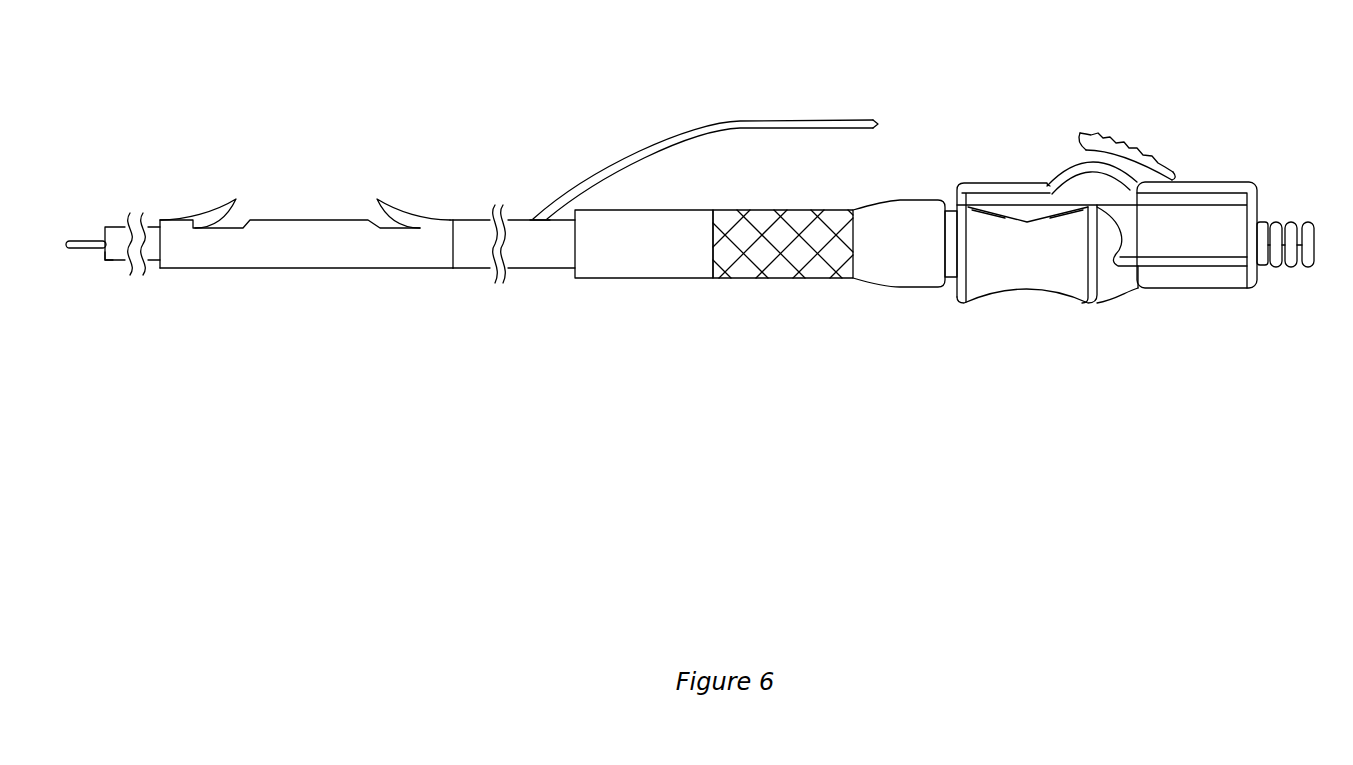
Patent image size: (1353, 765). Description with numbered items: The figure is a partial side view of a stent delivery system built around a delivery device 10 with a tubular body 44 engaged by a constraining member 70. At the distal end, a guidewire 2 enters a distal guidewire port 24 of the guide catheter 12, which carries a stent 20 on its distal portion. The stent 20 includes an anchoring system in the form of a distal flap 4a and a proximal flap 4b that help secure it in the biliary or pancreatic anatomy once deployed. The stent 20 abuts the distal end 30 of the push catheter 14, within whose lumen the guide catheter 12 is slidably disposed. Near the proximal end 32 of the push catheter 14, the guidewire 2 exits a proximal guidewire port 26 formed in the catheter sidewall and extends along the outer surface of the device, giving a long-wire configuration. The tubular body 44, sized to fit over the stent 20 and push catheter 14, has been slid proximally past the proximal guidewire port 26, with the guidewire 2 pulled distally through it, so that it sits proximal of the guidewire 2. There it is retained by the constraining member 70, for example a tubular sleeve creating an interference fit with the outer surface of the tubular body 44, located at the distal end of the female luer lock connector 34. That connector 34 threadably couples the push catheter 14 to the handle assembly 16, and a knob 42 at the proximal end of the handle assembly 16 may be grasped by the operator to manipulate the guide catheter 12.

The delivery device 10 is at (543, 99).
The guidewire 2 is at (83, 240).
The distal guidewire port 24 is at (105, 258).
The guide catheter 12 is at (118, 262).
The distal flap 4a is at (232, 202).
The proximal flap 4b is at (398, 222).
The stent 20 is at (302, 268).
The distal end of the push catheter 30 is at (453, 269).
The push catheter 14 is at (472, 270).
The proximal guidewire port 26 is at (532, 217).
The tubular body 44 is at (655, 280).
The constraining member 70 is at (763, 210).
The proximal end of the push catheter 32 is at (714, 259).
The female luer lock connector 34 is at (915, 207).
The handle assembly 16 is at (1066, 349).
The knob 42 is at (1290, 224).